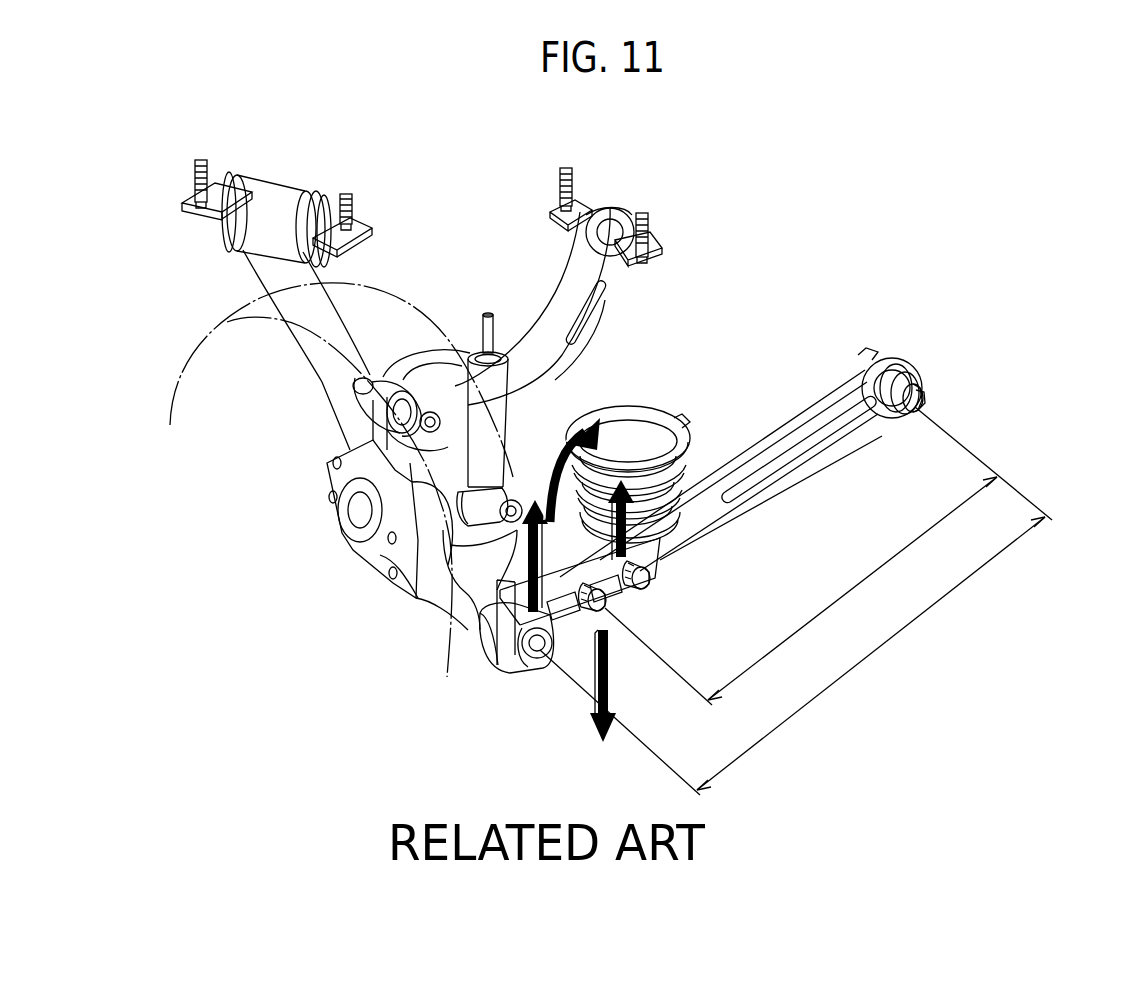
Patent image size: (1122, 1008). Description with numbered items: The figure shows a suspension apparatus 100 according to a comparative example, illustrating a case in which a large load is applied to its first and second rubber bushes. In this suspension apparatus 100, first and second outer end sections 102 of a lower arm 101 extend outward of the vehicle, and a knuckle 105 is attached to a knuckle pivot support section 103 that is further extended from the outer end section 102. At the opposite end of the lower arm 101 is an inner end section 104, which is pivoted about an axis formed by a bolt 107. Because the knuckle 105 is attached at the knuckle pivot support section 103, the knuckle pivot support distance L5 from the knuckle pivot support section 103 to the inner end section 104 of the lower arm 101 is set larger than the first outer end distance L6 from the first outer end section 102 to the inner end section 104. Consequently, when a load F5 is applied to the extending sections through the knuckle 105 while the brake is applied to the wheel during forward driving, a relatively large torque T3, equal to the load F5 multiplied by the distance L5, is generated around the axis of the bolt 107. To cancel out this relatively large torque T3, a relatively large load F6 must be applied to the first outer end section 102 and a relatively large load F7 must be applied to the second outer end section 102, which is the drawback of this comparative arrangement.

The suspension apparatus 100 is at (765, 288).
The lower arm 101 is at (787, 488).
The outer end section 102 is at (612, 606).
The knuckle pivot support section 103 is at (500, 650).
The inner end section 104 is at (881, 356).
The knuckle 105 is at (380, 555).
The bolt 107 is at (920, 405).
The load F5 is at (497, 597).
The load F6 is at (600, 680).
The load F7 is at (660, 560).
The torque T3 is at (557, 482).
The knuckle pivot support distance L5 is at (845, 676).
The first outer end distance L6 is at (830, 604).